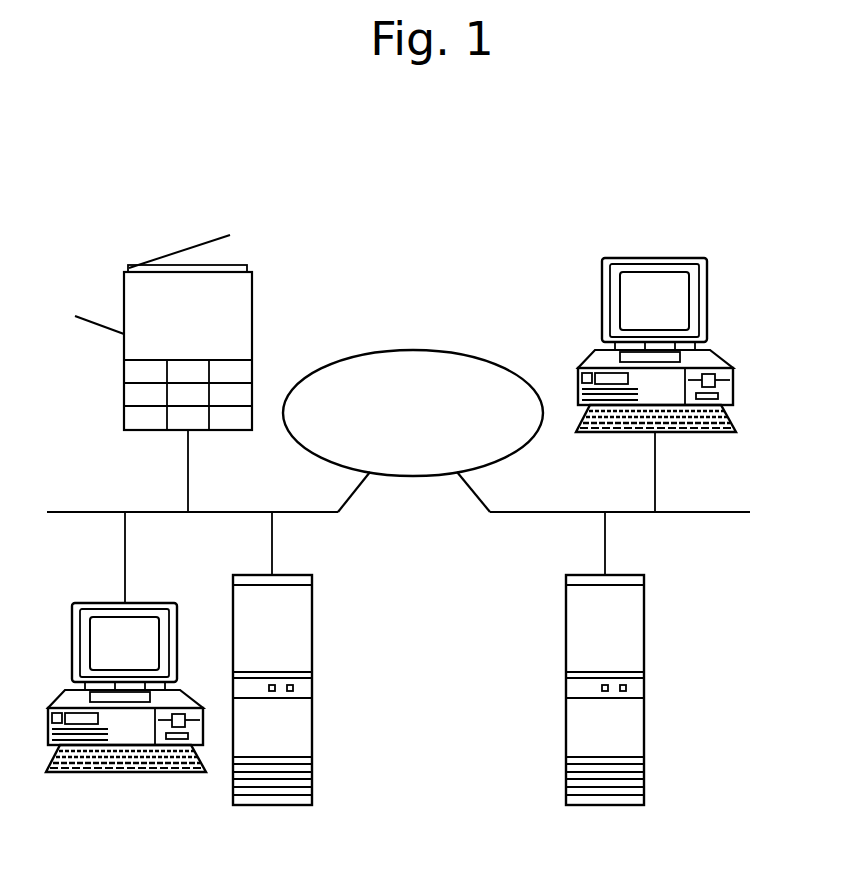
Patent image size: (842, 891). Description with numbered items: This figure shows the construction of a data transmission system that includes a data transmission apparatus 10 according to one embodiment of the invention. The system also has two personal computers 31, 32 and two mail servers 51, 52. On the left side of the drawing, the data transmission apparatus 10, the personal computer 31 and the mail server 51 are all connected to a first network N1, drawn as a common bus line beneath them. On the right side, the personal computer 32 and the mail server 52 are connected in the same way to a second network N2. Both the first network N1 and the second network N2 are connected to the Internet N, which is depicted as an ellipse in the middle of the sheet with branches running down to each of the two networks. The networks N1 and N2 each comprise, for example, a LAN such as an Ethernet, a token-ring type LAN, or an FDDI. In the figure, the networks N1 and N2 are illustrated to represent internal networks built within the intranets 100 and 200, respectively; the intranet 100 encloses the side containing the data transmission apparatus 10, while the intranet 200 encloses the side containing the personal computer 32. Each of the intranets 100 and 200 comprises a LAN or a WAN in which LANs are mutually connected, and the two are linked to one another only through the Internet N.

The intranet 100 is at (141, 210).
The data transmission apparatus 10 is at (253, 297).
The Internet N is at (408, 348).
The first network N1 is at (67, 512).
The second network N2 is at (703, 512).
The personal computer 31 is at (120, 773).
The personal computer 32 is at (668, 258).
The mail server 51 is at (257, 806).
The mail server 52 is at (590, 806).
The intranet 200 is at (687, 170).